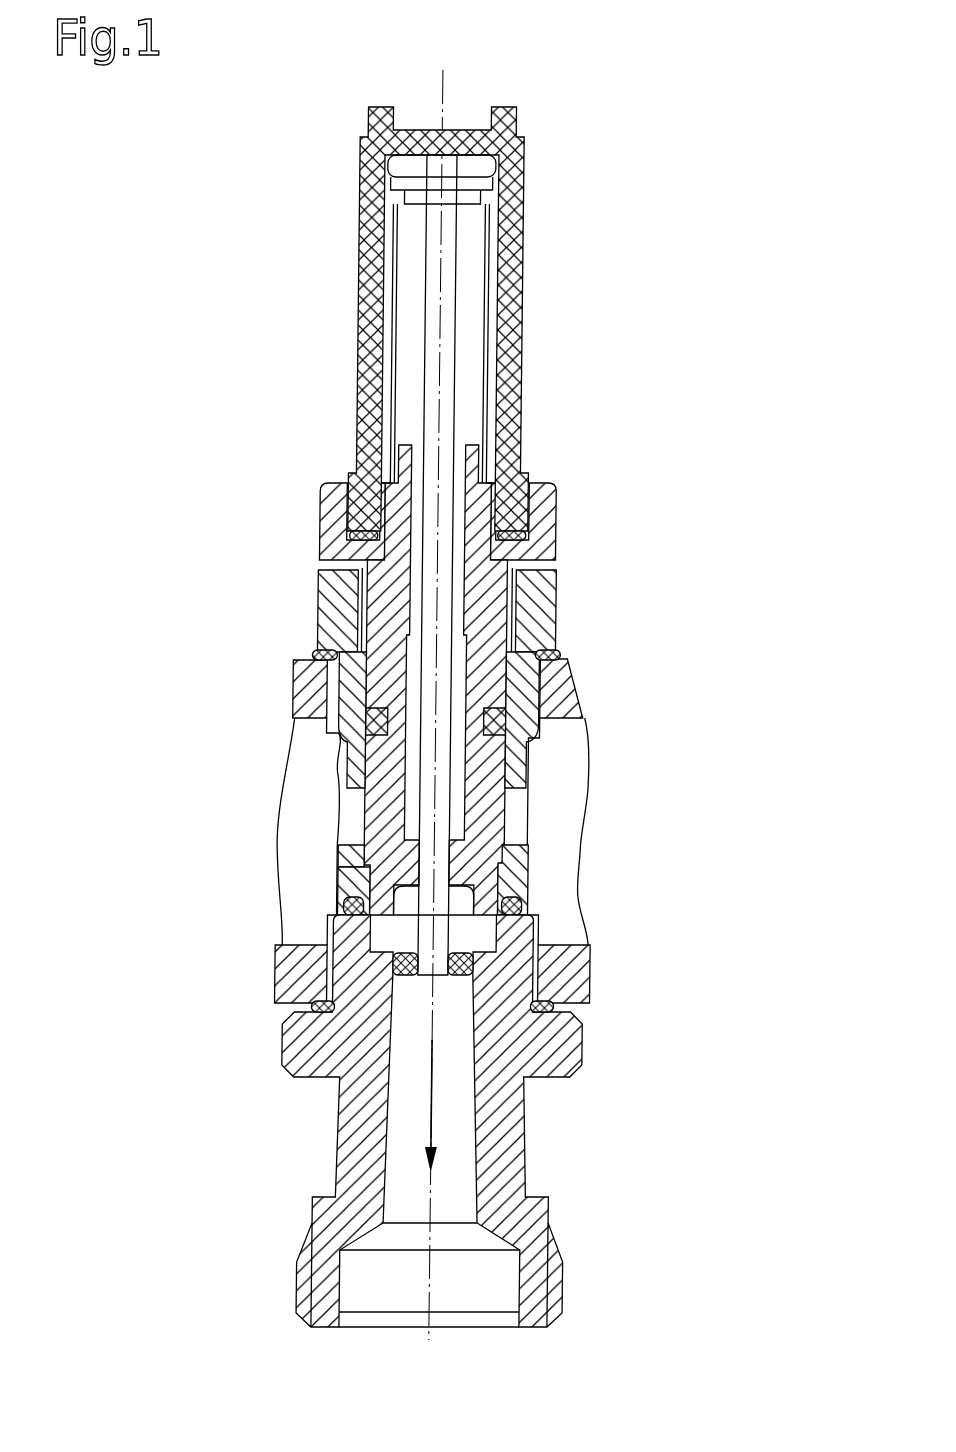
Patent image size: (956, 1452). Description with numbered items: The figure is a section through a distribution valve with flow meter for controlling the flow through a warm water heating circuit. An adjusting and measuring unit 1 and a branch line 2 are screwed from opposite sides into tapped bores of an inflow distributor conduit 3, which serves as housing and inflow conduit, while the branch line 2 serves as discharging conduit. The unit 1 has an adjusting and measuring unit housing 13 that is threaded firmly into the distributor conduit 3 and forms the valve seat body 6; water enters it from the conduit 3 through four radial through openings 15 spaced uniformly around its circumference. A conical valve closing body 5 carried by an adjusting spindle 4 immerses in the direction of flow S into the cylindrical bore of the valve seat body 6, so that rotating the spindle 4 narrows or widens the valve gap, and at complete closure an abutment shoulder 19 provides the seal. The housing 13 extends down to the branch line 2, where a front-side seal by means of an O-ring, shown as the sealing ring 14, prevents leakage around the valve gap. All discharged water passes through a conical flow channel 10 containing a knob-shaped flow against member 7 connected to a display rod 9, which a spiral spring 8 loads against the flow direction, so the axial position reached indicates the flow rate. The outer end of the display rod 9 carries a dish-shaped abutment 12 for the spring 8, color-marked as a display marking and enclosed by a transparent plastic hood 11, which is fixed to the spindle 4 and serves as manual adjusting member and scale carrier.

The adjusting and measuring unit 1 is at (252, 492).
The branch line 2 is at (363, 1138).
The inflow distributor conduit 3 is at (566, 702).
The adjusting spindle 4 is at (528, 601).
The valve closing body 5 is at (505, 884).
The valve seat body 6 is at (534, 855).
The flow against member 7 is at (474, 966).
The spiral spring 8 is at (372, 245).
The display rod 9 is at (442, 338).
The flow channel 10 is at (467, 1118).
The transparent plastic hood 11 is at (504, 220).
The dish-shaped abutment 12 is at (403, 182).
The adjusting and measuring unit housing 13 is at (332, 626).
The sealing ring 14 is at (353, 905).
The radial through openings 15 is at (338, 809).
The abutment shoulder 19 is at (349, 856).